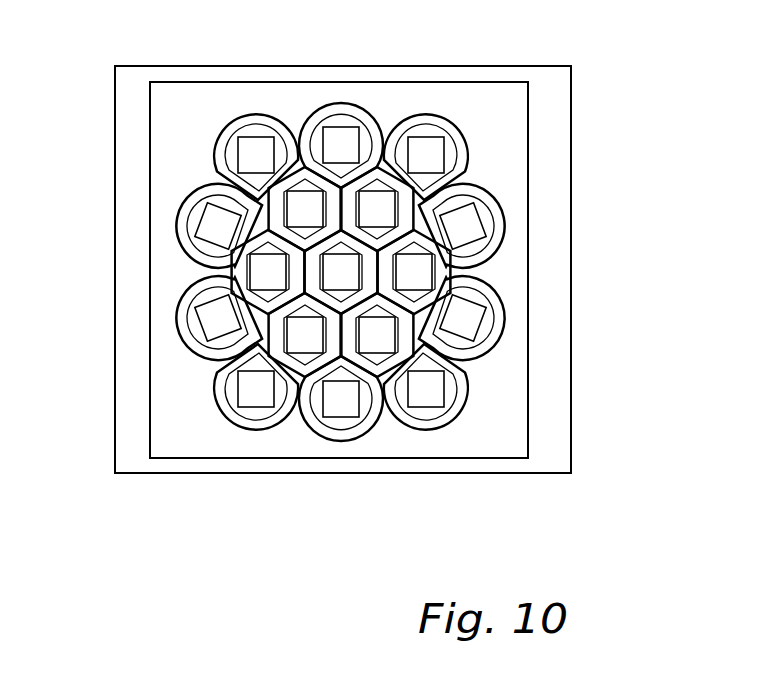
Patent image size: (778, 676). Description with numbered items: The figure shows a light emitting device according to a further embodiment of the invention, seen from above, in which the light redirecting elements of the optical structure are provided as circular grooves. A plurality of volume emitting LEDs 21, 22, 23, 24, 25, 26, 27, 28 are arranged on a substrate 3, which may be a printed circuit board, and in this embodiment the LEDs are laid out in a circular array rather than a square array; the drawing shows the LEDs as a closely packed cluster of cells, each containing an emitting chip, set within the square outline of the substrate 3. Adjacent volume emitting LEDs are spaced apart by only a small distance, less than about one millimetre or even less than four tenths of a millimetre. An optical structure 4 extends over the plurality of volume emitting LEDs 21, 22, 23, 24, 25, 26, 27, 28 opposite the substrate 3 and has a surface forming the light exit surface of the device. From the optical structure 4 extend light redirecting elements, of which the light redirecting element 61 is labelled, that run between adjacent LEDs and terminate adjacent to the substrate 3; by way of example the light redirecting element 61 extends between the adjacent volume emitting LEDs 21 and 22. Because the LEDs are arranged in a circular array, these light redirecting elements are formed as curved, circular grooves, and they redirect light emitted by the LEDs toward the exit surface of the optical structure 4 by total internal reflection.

The substrate 3 is at (130, 165).
The optical structure 4 is at (172, 128).
The volume emitting LED 21 is at (277, 270).
The volume emitting LED 22 is at (340, 272).
The volume emitting LED 23 is at (405, 270).
The volume emitting LED 24 is at (417, 155).
The volume emitting LED 25 is at (466, 318).
The volume emitting LED 26 is at (340, 400).
The volume emitting LED 27 is at (220, 318).
The volume emitting LED 28 is at (257, 158).
The light redirecting element 61 is at (343, 268).